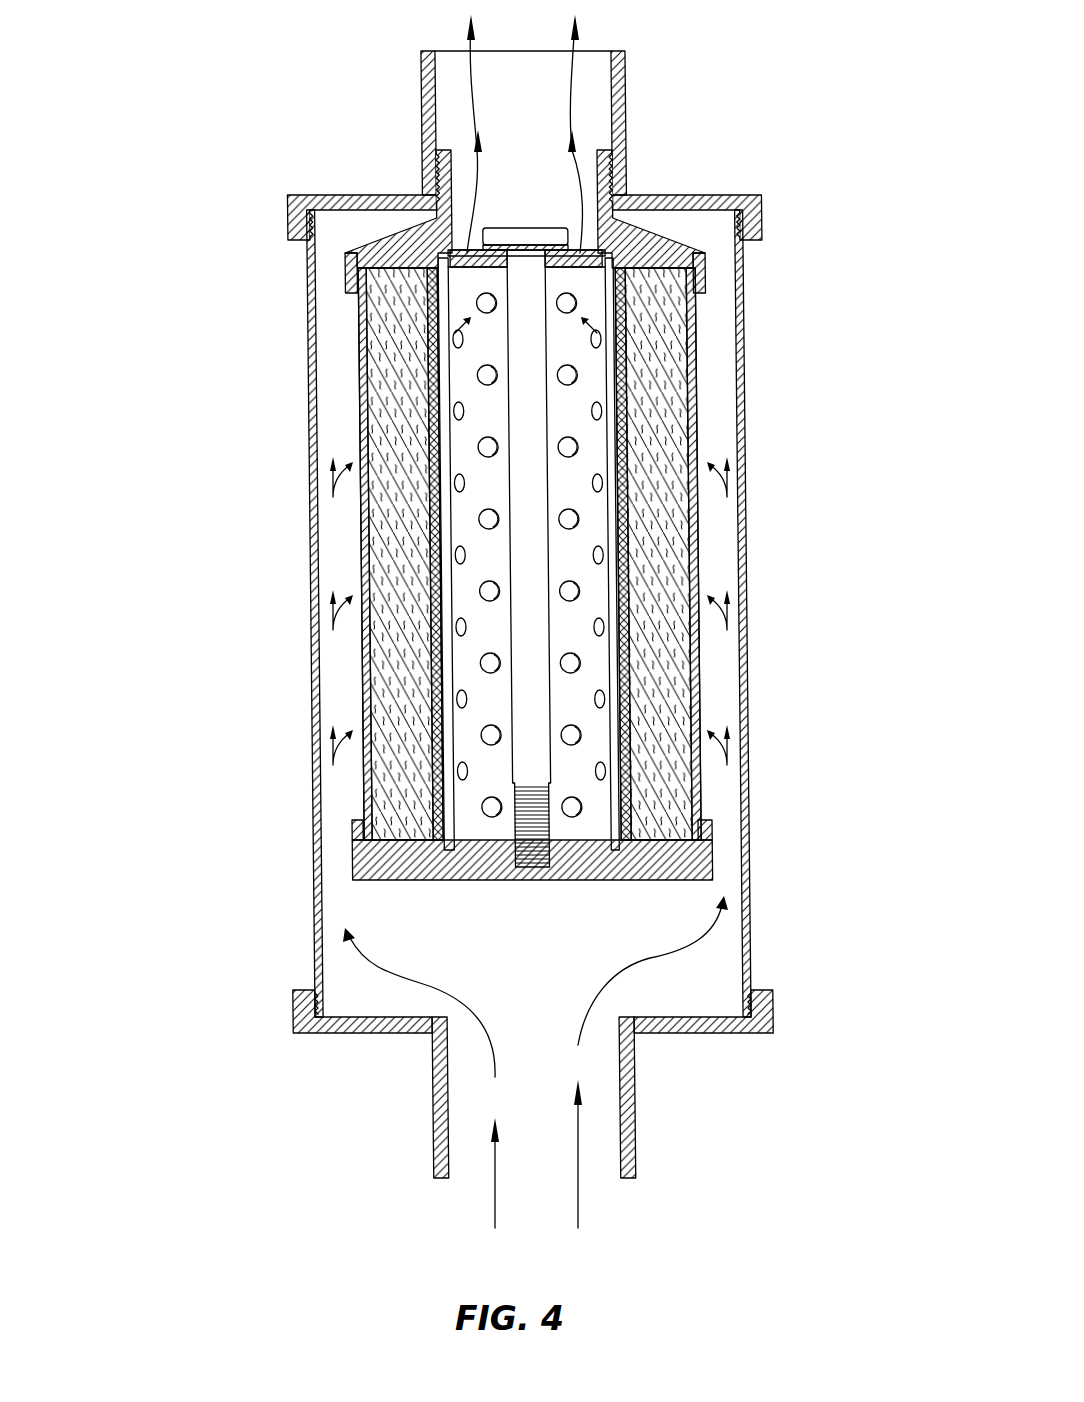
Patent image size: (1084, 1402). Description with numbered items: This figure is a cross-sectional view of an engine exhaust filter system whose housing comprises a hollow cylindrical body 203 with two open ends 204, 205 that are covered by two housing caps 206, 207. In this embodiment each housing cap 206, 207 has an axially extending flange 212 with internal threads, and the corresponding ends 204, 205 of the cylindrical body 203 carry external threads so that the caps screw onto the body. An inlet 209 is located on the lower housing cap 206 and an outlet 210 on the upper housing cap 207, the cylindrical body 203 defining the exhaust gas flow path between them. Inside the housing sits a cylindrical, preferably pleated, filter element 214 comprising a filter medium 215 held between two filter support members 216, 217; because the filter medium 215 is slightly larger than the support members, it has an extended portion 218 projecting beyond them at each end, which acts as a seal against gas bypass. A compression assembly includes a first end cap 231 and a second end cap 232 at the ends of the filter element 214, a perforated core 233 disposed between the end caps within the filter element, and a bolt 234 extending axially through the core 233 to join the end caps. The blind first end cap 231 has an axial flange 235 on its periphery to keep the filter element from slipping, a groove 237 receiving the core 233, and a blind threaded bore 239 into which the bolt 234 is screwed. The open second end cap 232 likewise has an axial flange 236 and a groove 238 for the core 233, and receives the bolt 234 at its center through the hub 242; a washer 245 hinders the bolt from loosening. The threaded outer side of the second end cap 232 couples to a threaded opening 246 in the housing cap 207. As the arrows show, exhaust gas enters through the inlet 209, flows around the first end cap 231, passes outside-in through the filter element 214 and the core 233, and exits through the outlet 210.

The cylindrical body 203 is at (310, 850).
The open end 204 is at (368, 1000).
The open end 205 is at (342, 230).
The housing cap 206 is at (683, 1033).
The housing cap 207 is at (333, 195).
The inlet 209 is at (630, 1175).
The outlet 210 is at (618, 63).
The axially extending flange 212 is at (752, 213).
The filter element 214 is at (698, 633).
The filter medium 215 is at (397, 659).
The filter support member 216 is at (698, 532).
The filter support member 217 is at (623, 685).
The extended portion 218 is at (667, 823).
The first end cap 231 is at (698, 862).
The second end cap 232 is at (663, 235).
The perforated core 233 is at (627, 410).
The bolt 234 is at (543, 228).
The axial flange 235 is at (710, 825).
The axial flange 236 is at (345, 280).
The groove 237 is at (607, 852).
The groove 238 is at (445, 262).
The threaded bore 239 is at (527, 867).
The hub 242 is at (570, 298).
The washer 245 is at (472, 280).
The threaded opening 246 is at (462, 110).